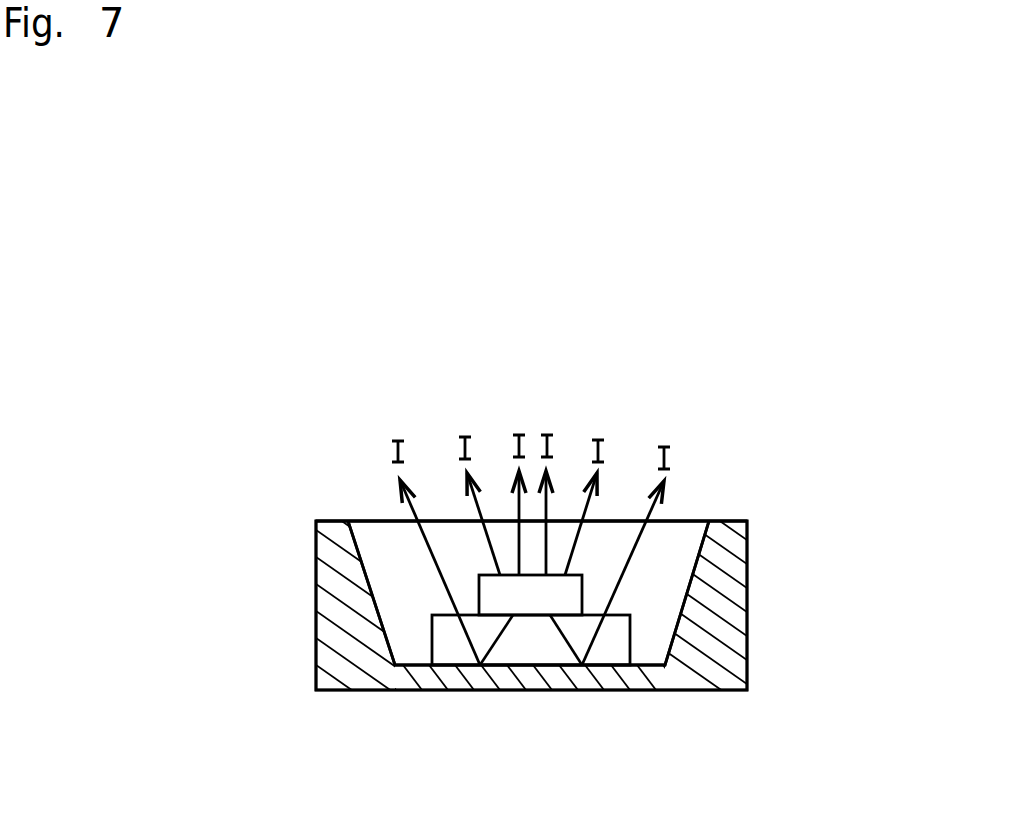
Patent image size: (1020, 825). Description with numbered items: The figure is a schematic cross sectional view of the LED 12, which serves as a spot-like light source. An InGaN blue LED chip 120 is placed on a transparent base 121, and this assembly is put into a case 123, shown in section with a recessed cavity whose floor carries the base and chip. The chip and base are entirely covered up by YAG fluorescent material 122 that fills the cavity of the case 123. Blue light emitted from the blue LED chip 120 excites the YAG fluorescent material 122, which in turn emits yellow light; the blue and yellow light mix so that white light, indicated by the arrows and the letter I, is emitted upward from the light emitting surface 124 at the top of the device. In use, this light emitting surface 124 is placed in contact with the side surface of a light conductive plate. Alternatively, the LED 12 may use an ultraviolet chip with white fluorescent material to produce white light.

The LED 12 is at (627, 425).
The blue LED chip 120 is at (565, 598).
The transparent base 121 is at (533, 655).
The YAG fluorescent material 122 is at (402, 623).
The case 123 is at (723, 598).
The light emitting surface 124 is at (678, 521).